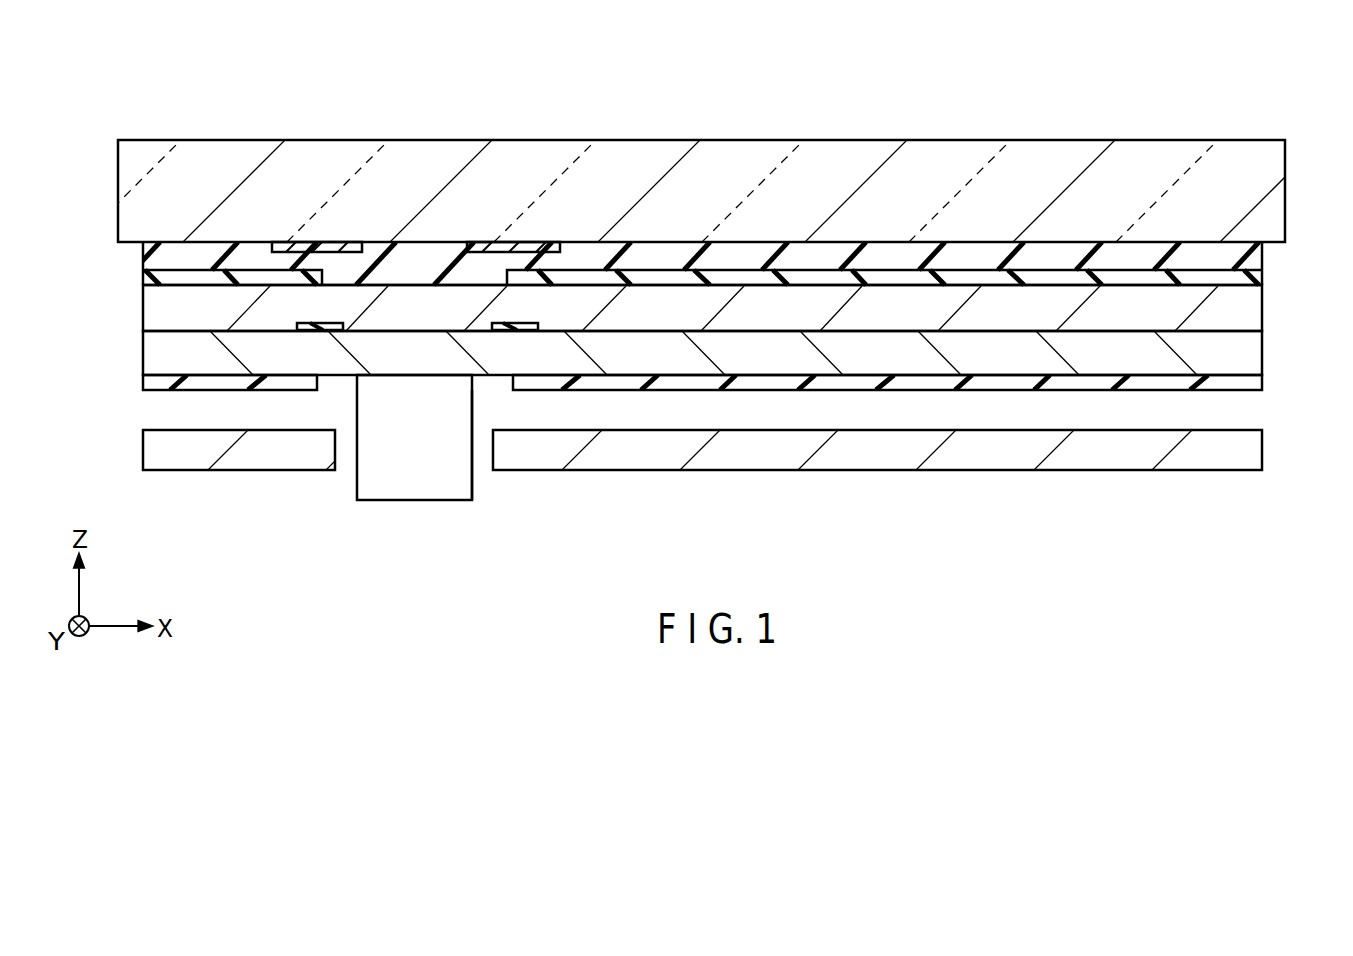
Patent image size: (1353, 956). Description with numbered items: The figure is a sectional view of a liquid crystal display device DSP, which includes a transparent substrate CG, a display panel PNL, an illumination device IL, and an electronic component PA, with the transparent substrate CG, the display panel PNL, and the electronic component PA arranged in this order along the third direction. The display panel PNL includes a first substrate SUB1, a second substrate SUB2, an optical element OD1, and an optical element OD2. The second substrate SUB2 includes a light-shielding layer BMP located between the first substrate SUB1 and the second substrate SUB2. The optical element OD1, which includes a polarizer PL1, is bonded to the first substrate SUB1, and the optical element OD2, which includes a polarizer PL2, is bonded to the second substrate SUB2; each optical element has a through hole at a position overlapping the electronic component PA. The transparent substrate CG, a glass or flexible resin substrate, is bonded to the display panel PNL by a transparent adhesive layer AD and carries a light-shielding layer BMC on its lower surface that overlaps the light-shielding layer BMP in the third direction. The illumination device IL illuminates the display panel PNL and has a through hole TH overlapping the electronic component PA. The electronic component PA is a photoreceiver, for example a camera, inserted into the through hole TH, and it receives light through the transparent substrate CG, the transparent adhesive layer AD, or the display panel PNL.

The liquid crystal display device DSP is at (700, 327).
The transparent substrate CG is at (122, 197).
The transparent adhesive layer AD is at (145, 258).
The optical element OD2 is at (655, 286).
The polarizer PL2 is at (147, 280).
The second substrate SUB2 is at (148, 306).
The first substrate SUB1 is at (148, 358).
The optical element OD1 is at (667, 405).
The polarizer PL1 is at (667, 405).
The display panel PNL is at (692, 305).
The light-shielding layer BMC is at (499, 247).
The light-shielding layer BMP is at (537, 488).
The electronic component PA is at (418, 493).
The through hole TH is at (484, 482).
The illumination device IL is at (1276, 445).